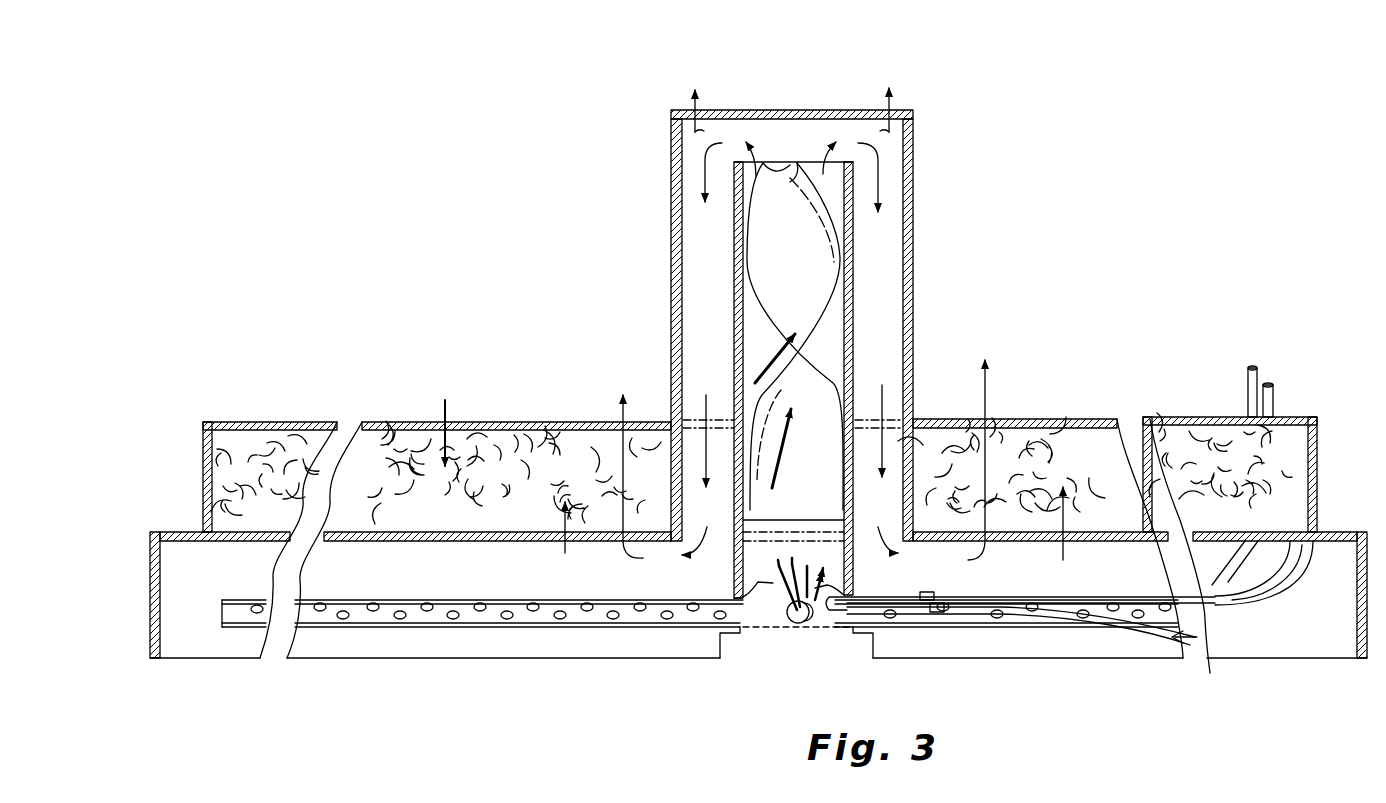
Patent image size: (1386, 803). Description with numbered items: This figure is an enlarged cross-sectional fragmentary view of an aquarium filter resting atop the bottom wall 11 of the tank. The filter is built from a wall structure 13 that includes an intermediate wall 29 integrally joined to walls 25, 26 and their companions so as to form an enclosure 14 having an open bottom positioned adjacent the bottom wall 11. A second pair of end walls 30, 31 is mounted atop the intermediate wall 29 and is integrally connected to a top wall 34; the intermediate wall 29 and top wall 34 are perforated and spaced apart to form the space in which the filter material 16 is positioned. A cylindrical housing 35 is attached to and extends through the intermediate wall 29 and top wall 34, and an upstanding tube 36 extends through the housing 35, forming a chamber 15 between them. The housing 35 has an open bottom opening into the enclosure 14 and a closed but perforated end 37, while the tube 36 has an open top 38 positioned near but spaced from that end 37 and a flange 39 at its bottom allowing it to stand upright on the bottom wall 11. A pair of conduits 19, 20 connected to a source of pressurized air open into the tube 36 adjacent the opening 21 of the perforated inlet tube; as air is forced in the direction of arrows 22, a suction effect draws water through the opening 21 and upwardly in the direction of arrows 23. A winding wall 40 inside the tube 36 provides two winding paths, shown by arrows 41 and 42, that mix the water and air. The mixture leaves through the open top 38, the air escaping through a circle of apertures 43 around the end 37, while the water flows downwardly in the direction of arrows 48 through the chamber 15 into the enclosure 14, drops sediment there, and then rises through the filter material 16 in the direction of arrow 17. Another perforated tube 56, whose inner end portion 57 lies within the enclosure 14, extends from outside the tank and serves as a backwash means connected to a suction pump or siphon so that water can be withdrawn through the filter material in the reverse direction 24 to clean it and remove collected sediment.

The bottom wall 11 is at (305, 658).
The wall structure 13 is at (390, 422).
The enclosure 14 is at (520, 570).
The chamber 15 is at (873, 246).
The filter material 16 is at (483, 448).
The arrow 17 is at (814, 535).
The conduit 19 is at (960, 608).
The conduit 20 is at (926, 596).
The opening 21 is at (799, 620).
The arrows 22 is at (1197, 640).
The arrows 23 is at (820, 611).
The direction 24 is at (445, 405).
The wall 25 is at (150, 598).
The wall 26 is at (1367, 608).
The intermediate wall 29 is at (185, 532).
The end wall 30 is at (202, 463).
The end wall 31 is at (1318, 460).
The top wall 34 is at (290, 422).
The cylindrical housing 35 is at (912, 173).
The upstanding tube 36 is at (853, 350).
The closed perforated end 37 is at (803, 110).
The open top 38 is at (802, 146).
The flange 39 is at (720, 640).
The winding wall 40 is at (847, 313).
The arrow 41 is at (777, 414).
The arrow 42 is at (767, 367).
The apertures 43 is at (695, 110).
The arrows 48 is at (794, 425).
The perforated tube 56 is at (540, 627).
The tube end cap 57 is at (230, 630).